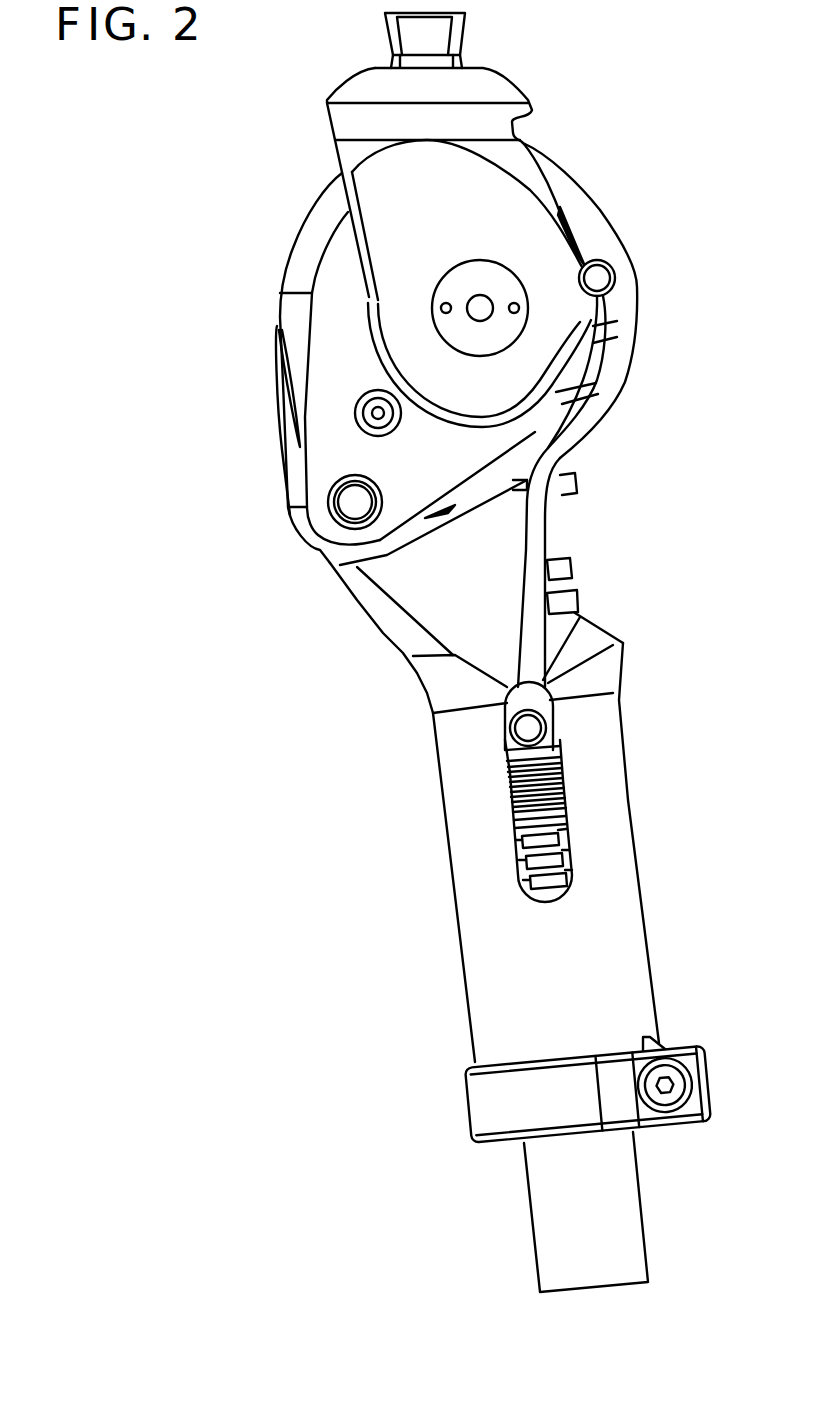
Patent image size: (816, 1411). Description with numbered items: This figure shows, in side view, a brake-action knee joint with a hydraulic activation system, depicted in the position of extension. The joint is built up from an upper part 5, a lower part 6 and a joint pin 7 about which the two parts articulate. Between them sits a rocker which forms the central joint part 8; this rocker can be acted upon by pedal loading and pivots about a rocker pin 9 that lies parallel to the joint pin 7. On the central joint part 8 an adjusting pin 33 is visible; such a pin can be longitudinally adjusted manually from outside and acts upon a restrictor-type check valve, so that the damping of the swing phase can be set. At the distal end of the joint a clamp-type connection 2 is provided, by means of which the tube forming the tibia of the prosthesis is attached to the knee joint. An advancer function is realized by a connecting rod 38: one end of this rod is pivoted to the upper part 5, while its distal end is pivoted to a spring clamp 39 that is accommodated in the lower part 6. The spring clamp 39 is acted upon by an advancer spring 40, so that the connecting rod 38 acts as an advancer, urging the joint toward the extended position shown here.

The clamp-type connection 2 is at (482, 1107).
The upper part 5 is at (343, 120).
The lower part 6 is at (393, 620).
The joint pin 7 is at (480, 305).
The central joint part 8 is at (328, 338).
The rocker pin 9 is at (360, 502).
The adjusting pin 33 is at (370, 415).
The connecting rod 38 is at (540, 530).
The spring clamp 39 is at (553, 737).
The advancer spring 40 is at (567, 863).